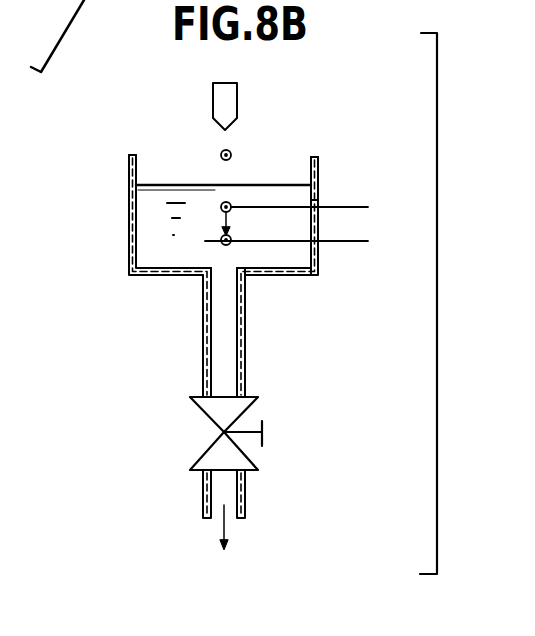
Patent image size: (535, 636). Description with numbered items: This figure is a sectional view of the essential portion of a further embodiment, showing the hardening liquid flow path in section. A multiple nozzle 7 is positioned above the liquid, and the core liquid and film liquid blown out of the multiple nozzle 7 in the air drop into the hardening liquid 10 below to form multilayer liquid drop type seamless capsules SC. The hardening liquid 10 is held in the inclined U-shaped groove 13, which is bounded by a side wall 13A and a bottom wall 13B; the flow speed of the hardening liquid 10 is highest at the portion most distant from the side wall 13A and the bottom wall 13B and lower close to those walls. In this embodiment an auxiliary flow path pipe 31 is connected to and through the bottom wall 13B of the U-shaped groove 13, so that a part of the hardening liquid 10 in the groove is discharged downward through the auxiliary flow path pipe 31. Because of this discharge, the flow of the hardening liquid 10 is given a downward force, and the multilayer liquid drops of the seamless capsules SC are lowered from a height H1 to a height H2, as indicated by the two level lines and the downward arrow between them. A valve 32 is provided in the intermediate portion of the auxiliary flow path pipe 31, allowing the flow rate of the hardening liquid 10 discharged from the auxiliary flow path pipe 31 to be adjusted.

The multiple nozzle 7 is at (237, 97).
The hardening liquid 10 is at (162, 236).
The U-shaped groove 13 is at (321, 165).
The side wall 13A is at (318, 181).
The bottom wall 13B is at (280, 277).
The auxiliary flow path pipe 31 is at (245, 368).
The valve 32 is at (252, 463).
The seamless capsule SC is at (220, 240).
The height H1 is at (319, 206).
The height H2 is at (306, 241).